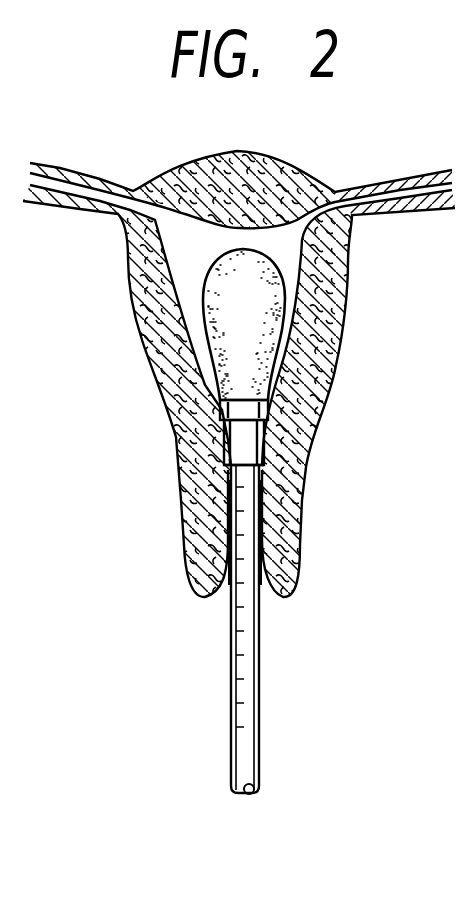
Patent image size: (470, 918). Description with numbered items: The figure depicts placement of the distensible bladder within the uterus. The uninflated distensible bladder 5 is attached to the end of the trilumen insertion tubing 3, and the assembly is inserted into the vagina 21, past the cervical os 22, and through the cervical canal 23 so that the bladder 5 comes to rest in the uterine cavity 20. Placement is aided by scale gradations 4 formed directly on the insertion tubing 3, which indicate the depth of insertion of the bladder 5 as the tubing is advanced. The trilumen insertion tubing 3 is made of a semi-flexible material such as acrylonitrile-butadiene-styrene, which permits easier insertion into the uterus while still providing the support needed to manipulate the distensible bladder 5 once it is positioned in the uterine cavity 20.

The trilumen insertion tubing 3 is at (243, 628).
The scale gradations 4 is at (233, 602).
The distensible bladder 5 is at (260, 253).
The uterine cavity 20 is at (239, 398).
The vagina 21 is at (268, 587).
The cervical os 22 is at (265, 553).
The cervical canal 23 is at (263, 481).